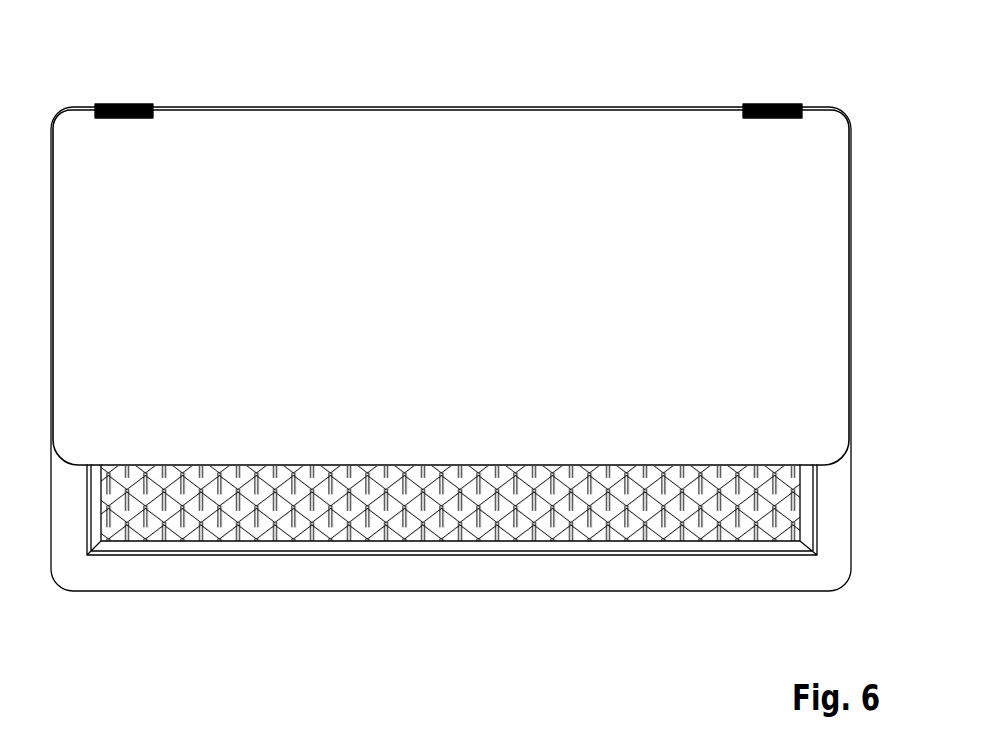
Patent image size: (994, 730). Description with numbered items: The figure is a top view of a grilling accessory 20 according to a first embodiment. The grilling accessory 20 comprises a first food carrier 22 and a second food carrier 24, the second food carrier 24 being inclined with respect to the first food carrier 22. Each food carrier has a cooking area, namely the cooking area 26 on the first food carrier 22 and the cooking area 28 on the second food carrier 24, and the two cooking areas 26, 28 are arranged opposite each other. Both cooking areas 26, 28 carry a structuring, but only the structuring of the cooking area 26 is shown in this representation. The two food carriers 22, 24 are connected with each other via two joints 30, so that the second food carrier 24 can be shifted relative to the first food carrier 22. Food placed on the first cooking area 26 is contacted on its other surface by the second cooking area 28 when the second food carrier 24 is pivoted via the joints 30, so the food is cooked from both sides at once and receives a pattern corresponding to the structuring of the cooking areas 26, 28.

The grilling accessory 20 is at (451, 337).
The first food carrier 22 is at (195, 576).
The second food carrier 24 is at (461, 124).
The cooking area 26 is at (544, 533).
The cooking area 28 is at (687, 484).
The joint 30 is at (127, 104).